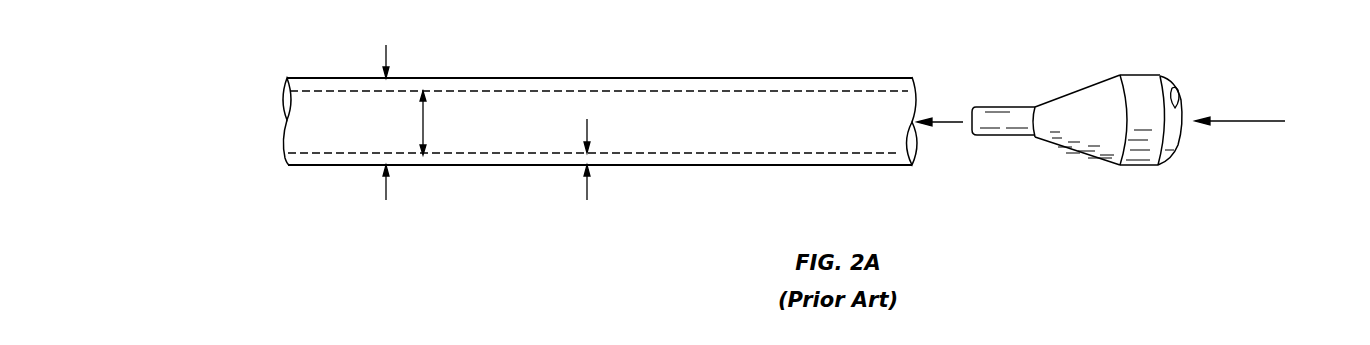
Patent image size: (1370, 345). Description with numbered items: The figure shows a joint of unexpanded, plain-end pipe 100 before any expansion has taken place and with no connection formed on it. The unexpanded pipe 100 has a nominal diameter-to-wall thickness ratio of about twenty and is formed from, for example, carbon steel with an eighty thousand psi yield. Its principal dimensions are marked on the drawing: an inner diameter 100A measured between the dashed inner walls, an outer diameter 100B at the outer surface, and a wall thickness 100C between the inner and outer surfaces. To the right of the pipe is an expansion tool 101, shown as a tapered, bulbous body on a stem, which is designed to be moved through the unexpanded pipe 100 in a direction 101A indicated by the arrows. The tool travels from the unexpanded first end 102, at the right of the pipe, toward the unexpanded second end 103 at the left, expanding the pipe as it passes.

The unexpanded pipe 100 is at (522, 145).
The inner diameter 100A is at (423, 118).
The outer diameter 100B is at (386, 56).
The wall thickness 100C is at (590, 185).
The expansion tool 101 is at (1143, 75).
The direction 101A is at (1255, 121).
The unexpanded first end 102 is at (880, 77).
The unexpanded second end 103 is at (307, 78).